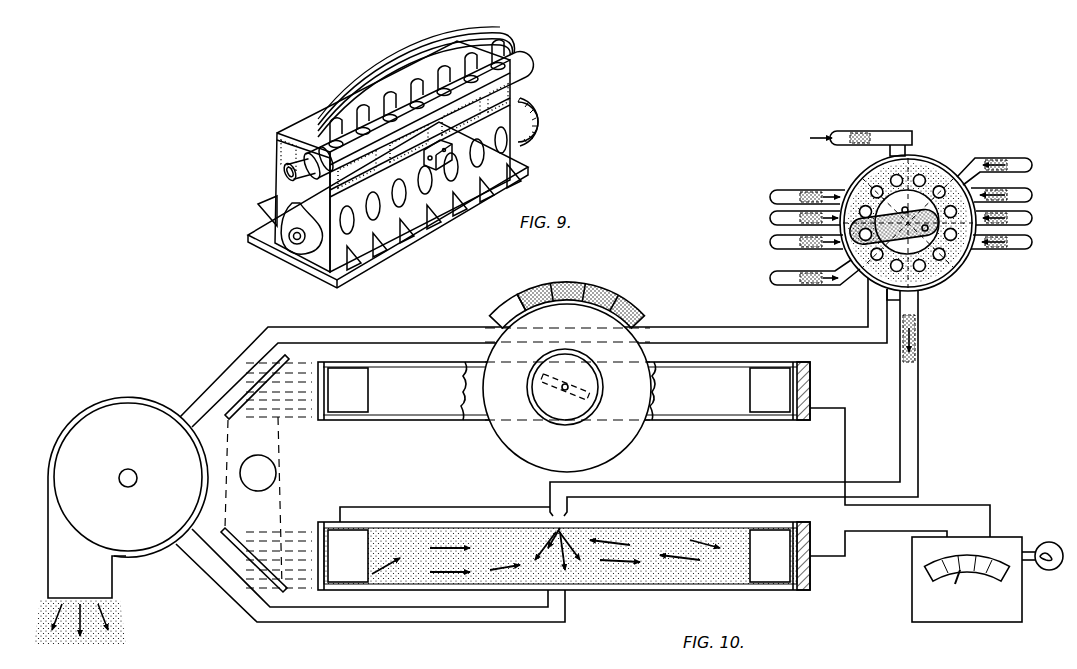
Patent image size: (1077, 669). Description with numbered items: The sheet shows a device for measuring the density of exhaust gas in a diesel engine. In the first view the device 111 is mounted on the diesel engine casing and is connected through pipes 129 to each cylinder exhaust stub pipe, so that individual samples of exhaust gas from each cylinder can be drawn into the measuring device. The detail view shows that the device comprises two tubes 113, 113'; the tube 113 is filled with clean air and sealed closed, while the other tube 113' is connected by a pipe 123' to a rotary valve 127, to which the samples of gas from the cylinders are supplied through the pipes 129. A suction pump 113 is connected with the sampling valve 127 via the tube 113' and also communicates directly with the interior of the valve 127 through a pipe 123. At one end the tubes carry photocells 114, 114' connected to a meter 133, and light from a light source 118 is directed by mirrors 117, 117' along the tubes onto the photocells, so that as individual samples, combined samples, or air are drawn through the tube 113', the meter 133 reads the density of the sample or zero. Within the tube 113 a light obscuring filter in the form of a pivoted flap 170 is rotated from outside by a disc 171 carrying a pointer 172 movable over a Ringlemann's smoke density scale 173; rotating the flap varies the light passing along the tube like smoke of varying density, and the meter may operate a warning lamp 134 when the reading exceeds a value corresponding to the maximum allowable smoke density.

In FIG. 9, the device 111 is at (428, 166).
In FIG. 9, the pipes 129 is at (418, 75).
In FIG. 10, the pipes 129 is at (843, 131).
In FIG. 10, the tube 113 is at (422, 503).
In FIG. 10, the tube 113' is at (564, 569).
In FIG. 10, the photocell 114 is at (893, 449).
In FIG. 10, the photocell 114' is at (872, 546).
In FIG. 10, the mirror 117 is at (255, 384).
In FIG. 10, the mirror 117' is at (370, 575).
In FIG. 10, the light source 118 is at (278, 470).
In FIG. 10, the pipe 123 is at (533, 352).
In FIG. 10, the pipe 123' is at (757, 403).
In FIG. 10, the rotary valve 127 is at (950, 272).
In FIG. 10, the meter 133 is at (1022, 598).
In FIG. 10, the warning lamp 134 is at (1046, 543).
In FIG. 10, the pivoted flap 170 is at (586, 398).
In FIG. 10, the disc 171 is at (628, 340).
In FIG. 10, the pointer 172 is at (520, 305).
In FIG. 10, the smoke density scale 173 is at (600, 297).